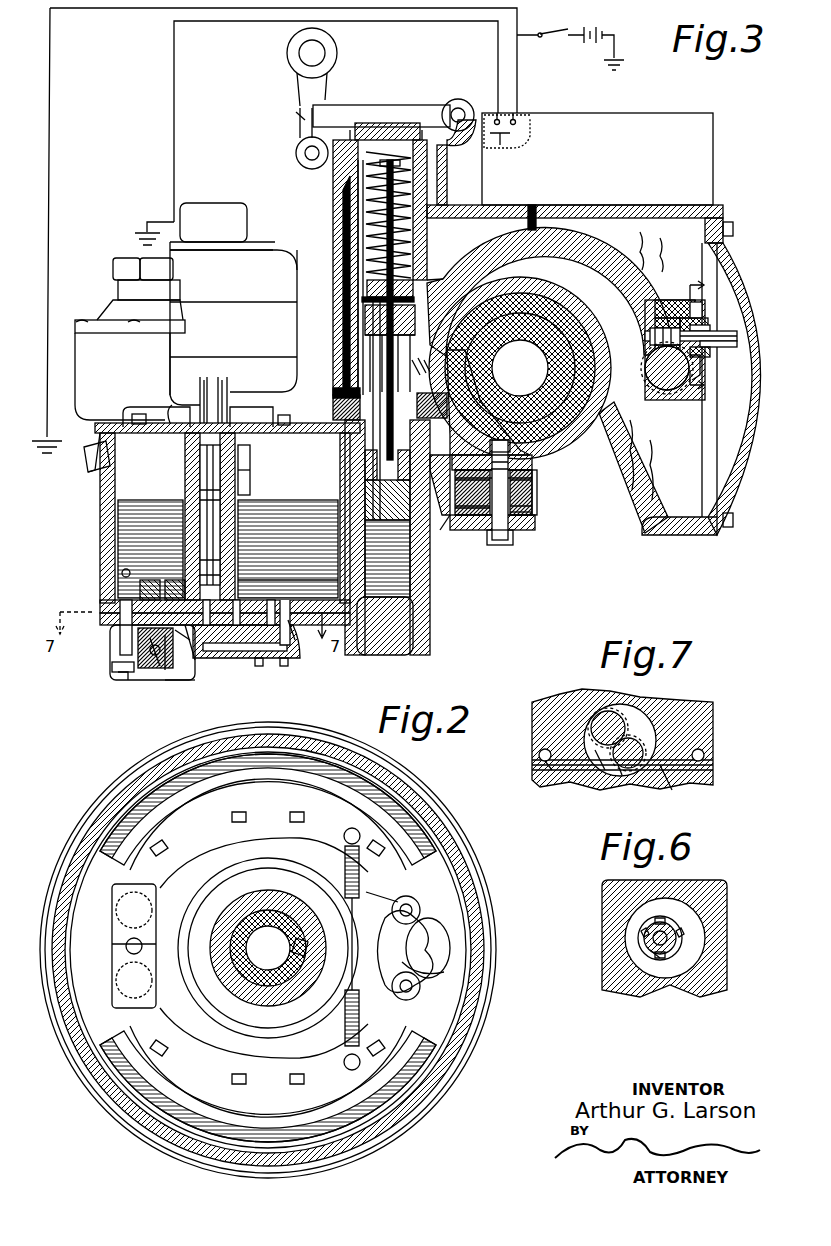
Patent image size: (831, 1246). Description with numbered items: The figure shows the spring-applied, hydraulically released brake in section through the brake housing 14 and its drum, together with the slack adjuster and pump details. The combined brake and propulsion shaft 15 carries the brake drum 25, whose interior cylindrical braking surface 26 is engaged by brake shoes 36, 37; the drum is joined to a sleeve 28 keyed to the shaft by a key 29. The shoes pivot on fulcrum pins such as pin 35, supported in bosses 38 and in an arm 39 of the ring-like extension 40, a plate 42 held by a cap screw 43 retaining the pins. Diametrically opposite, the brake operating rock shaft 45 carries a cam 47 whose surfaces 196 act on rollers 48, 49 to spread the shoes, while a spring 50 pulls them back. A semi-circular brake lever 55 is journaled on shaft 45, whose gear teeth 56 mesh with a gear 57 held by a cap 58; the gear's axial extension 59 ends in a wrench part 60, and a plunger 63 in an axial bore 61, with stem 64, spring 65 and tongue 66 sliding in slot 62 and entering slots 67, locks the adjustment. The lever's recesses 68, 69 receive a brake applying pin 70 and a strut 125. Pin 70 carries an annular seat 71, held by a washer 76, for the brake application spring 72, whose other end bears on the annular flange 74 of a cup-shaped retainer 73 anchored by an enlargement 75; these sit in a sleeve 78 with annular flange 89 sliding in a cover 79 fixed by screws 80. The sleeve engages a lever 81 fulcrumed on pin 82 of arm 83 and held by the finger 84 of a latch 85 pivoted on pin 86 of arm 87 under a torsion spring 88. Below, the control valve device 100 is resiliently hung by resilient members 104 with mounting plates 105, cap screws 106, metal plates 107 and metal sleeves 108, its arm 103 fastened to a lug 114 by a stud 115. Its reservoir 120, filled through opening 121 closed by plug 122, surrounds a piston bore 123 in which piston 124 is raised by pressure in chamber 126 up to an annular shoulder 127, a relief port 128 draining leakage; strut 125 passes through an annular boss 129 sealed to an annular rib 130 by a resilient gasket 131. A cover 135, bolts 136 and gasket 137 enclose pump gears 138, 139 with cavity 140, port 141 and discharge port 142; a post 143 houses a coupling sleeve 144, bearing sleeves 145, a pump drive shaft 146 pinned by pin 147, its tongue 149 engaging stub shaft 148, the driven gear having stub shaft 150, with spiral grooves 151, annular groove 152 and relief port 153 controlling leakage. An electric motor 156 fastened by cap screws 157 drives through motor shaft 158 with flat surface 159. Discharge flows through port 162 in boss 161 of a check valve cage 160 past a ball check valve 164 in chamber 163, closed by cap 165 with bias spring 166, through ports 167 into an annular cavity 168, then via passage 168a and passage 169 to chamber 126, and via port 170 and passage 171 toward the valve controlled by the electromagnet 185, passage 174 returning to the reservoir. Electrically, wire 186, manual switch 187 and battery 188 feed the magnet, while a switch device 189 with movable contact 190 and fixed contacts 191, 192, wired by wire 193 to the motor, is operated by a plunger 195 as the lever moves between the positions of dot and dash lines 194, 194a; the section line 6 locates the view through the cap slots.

In FIG. 3, the section line 6— 6 is at (711, 337).
In FIG. 3, the brake housing 14 is at (648, 520).
In FIG. 3, the combined brake and propulsion shaft 15 is at (494, 368).
In FIG. 2, the combined brake and propulsion shaft 15 is at (265, 925).
In FIG. 2, the brake drum 25 is at (125, 1140).
In FIG. 2, the cylindrical braking surface 26 is at (80, 1030).
In FIG. 2, the sleeve 28 is at (245, 925).
In FIG. 2, the key 29 is at (305, 956).
In FIG. 2, the fulcrum pin 35 is at (120, 902).
In FIG. 2, the brake shoe 36 is at (125, 1080).
In FIG. 2, the brake shoe 37 is at (130, 805).
In FIG. 2, the bosses 38 is at (112, 938).
In FIG. 2, the arm 39 is at (200, 905).
In FIG. 2, the ring-like extension 40 is at (238, 865).
In FIG. 2, the plate 42 is at (142, 972).
In FIG. 2, the cap screw 43 is at (116, 972).
In FIG. 3, the brake operating rock shaft 45 is at (660, 378).
In FIG. 2, the brake operating rock shaft 45 is at (430, 922).
In FIG. 2, the cam 47 is at (450, 948).
In FIG. 2, the roller 48 is at (444, 970).
In FIG. 2, the roller 49 is at (420, 908).
In FIG. 2, the spring 50 is at (345, 860).
In FIG. 3, the brake lever 55 is at (514, 256).
In FIG. 6, the brake lever 55 is at (690, 888).
In FIG. 3, the gear teeth 56 is at (693, 385).
In FIG. 3, the gear 57 is at (660, 300).
In FIG. 3, the cap 58 is at (708, 318).
In FIG. 6, the cap 58 is at (682, 938).
In FIG. 3, the axial extension 59 is at (712, 352).
In FIG. 3, the wrench part 60 is at (737, 334).
In FIG. 6, the wrench part 60 is at (668, 940).
In FIG. 3, the axial bore 61 is at (650, 335).
In FIG. 3, the slot 62 is at (655, 320).
In FIG. 3, the plunger 63 is at (710, 328).
In FIG. 3, the stem 64 is at (737, 343).
In FIG. 3, the spring 65 is at (655, 350).
In FIG. 3, the tongue 66 is at (692, 302).
In FIG. 6, the tongue 66 is at (668, 928).
In FIG. 6, the slots 67 is at (655, 960).
In FIG. 3, the recess 68 is at (370, 325).
In FIG. 3, the recess 69 is at (375, 350).
In FIG. 3, the brake applying pin 70 is at (362, 300).
In FIG. 3, the annular seat 71 is at (367, 288).
In FIG. 3, the brake application spring 72 is at (366, 238).
In FIG. 3, the cup-shaped retainer 73 is at (447, 190).
In FIG. 3, the annular flange 74 is at (392, 160).
In FIG. 3, the enlargement 75 is at (402, 124).
In FIG. 3, the washer 76 is at (436, 275).
In FIG. 3, the sleeve 78 is at (344, 212).
In FIG. 3, the cover 79 is at (334, 178).
In FIG. 3, the screws 80 is at (350, 100).
In FIG. 3, the lever 81 is at (372, 122).
In FIG. 3, the pin 82 is at (452, 104).
In FIG. 3, the arm 83 is at (467, 150).
In FIG. 3, the finger 84 is at (330, 100).
In FIG. 3, the latch 85 is at (300, 112).
In FIG. 3, the pin 86 is at (296, 148).
In FIG. 3, the arm 87 is at (305, 156).
In FIG. 3, the torsion spring 88 is at (296, 110).
In FIG. 3, the annular flange 89 is at (358, 262).
In FIG. 3, the control valve device 100 is at (100, 498).
In FIG. 3, the arm 103 is at (534, 518).
In FIG. 3, the resilient member 104 is at (534, 488).
In FIG. 3, the mounting plate 105 is at (525, 530).
In FIG. 3, the cap screws 106 is at (455, 500).
In FIG. 3, the metal plate 107 is at (533, 474).
In FIG. 3, the metal sleeve 108 is at (478, 540).
In FIG. 3, the lug 114 is at (534, 462).
In FIG. 3, the stud 115 is at (497, 546).
In FIG. 3, the reservoir 120 is at (105, 520).
In FIG. 3, the opening 121 is at (95, 478).
In FIG. 3, the plug 122 is at (88, 462).
In FIG. 3, the piston bore 123 is at (375, 490).
In FIG. 3, the piston 124 is at (368, 508).
In FIG. 3, the strut 125 is at (333, 404).
In FIG. 3, the pressure chamber 126 is at (430, 606).
In FIG. 3, the annular shoulder 127 is at (430, 445).
In FIG. 3, the relief port 128 is at (365, 462).
In FIG. 3, the annular boss 129 is at (428, 392).
In FIG. 3, the annular rib 130 is at (340, 388).
In FIG. 3, the resilient gasket 131 is at (425, 368).
In FIG. 3, the cover 135 is at (270, 656).
In FIG. 3, the bolts 136 is at (125, 678).
In FIG. 3, the gasket 137 is at (292, 658).
In FIG. 3, the driving gear 138 is at (207, 660).
In FIG. 7, the driving gear 138 is at (642, 740).
In FIG. 7, the driven gear 139 is at (612, 708).
In FIG. 3, the cavity 140 is at (258, 666).
In FIG. 7, the cavity 140 is at (645, 730).
In FIG. 3, the port 141 is at (232, 660).
In FIG. 3, the discharge port 142 is at (170, 684).
In FIG. 7, the discharge port 142 is at (600, 760).
In FIG. 3, the post 143 is at (186, 482).
In FIG. 3, the coupling sleeve 144 is at (254, 470).
In FIG. 3, the bearing sleeve 145 is at (209, 539).
In FIG. 3, the pump drive shaft 146 is at (207, 528).
In FIG. 3, the pin 147 is at (254, 482).
In FIG. 3, the stub shaft 148 is at (288, 571).
In FIG. 7, the stub shaft 148 is at (620, 775).
In FIG. 3, the tongue 149 is at (288, 549).
In FIG. 7, the stub shaft 150 is at (572, 700).
In FIG. 3, the spiral groove 151 is at (184, 526).
In FIG. 3, the annular groove 152 is at (165, 402).
In FIG. 3, the relief port 153 is at (254, 402).
In FIG. 3, the electric motor 156 is at (247, 220).
In FIG. 3, the cap screws 157 is at (284, 404).
In FIG. 3, the motor shaft 158 is at (222, 420).
In FIG. 3, the flat surface 159 is at (200, 468).
In FIG. 3, the check valve cage 160 is at (120, 632).
In FIG. 3, the boss 161 is at (165, 680).
In FIG. 3, the port 162 is at (170, 688).
In FIG. 3, the chamber 163 is at (150, 658).
In FIG. 3, the ball check valve 164 is at (160, 666).
In FIG. 3, the cap 165 is at (182, 593).
In FIG. 3, the bias spring 166 is at (150, 553).
In FIG. 3, the ports 167 is at (120, 664).
In FIG. 3, the annular cavity 168 is at (118, 648).
In FIG. 3, the passage 168a is at (210, 660).
In FIG. 7, the passage 168a is at (685, 785).
In FIG. 3, the passage 169 is at (385, 626).
In FIG. 7, the passage 169 is at (704, 755).
In FIG. 3, the port 170 is at (105, 606).
In FIG. 7, the port 170 is at (548, 765).
In FIG. 3, the passage 171 is at (105, 600).
In FIG. 7, the passage 171 is at (539, 754).
In FIG. 3, the passage 174 is at (105, 560).
In FIG. 3, the electromagnet 185 is at (80, 342).
In FIG. 3, the wire 186 is at (50, 38).
In FIG. 3, the manually operative switch 187 is at (556, 33).
In FIG. 3, the battery 188 is at (598, 32).
In FIG. 3, the switch device 189 is at (600, 125).
In FIG. 3, the movable electric contact 190 is at (530, 140).
In FIG. 3, the fixed contact 191 is at (500, 118).
In FIG. 3, the fixed contact 192 is at (516, 118).
In FIG. 3, the wire 193 is at (175, 120).
In FIG. 3, the dot and dash line 194 is at (500, 262).
In FIG. 3, the dot and dash line 194a is at (585, 268).
In FIG. 3, the plunger 195 is at (526, 226).
In FIG. 2, the surfaces 196 is at (420, 988).